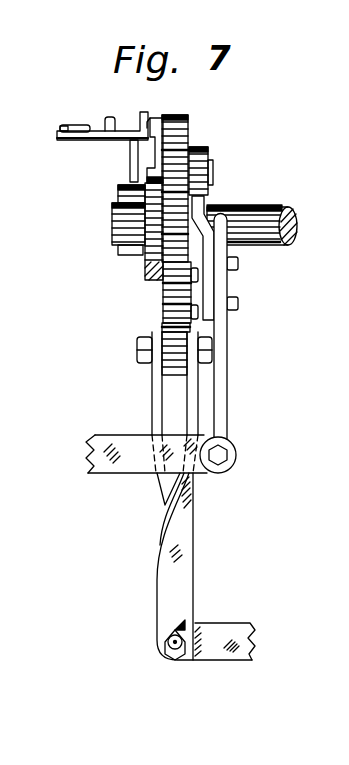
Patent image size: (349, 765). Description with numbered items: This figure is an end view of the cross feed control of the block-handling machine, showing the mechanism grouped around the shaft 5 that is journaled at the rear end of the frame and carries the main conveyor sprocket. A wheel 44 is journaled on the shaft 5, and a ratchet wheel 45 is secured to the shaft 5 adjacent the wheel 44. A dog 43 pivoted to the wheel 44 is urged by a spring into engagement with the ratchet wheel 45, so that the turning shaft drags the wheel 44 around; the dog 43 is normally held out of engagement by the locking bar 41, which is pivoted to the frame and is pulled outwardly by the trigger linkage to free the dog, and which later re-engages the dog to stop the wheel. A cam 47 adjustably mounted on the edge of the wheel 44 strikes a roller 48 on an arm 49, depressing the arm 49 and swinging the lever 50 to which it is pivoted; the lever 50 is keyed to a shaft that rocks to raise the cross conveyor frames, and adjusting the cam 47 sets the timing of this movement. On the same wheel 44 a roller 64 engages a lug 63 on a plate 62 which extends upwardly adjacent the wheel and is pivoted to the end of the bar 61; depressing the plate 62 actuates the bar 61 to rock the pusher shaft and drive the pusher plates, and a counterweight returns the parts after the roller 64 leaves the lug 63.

The shaft 5 is at (262, 204).
The locking bar 41 is at (148, 113).
The dog 43 is at (158, 180).
The wheel 44 is at (173, 237).
The ratchet wheel 45 is at (150, 272).
The cam 47 is at (172, 298).
The roller 48 is at (168, 365).
The arm 49 is at (178, 545).
The lever 50 is at (218, 630).
The bar 61 is at (113, 457).
The plate 62 is at (215, 392).
The lug 63 is at (203, 280).
The roller 64 is at (203, 145).